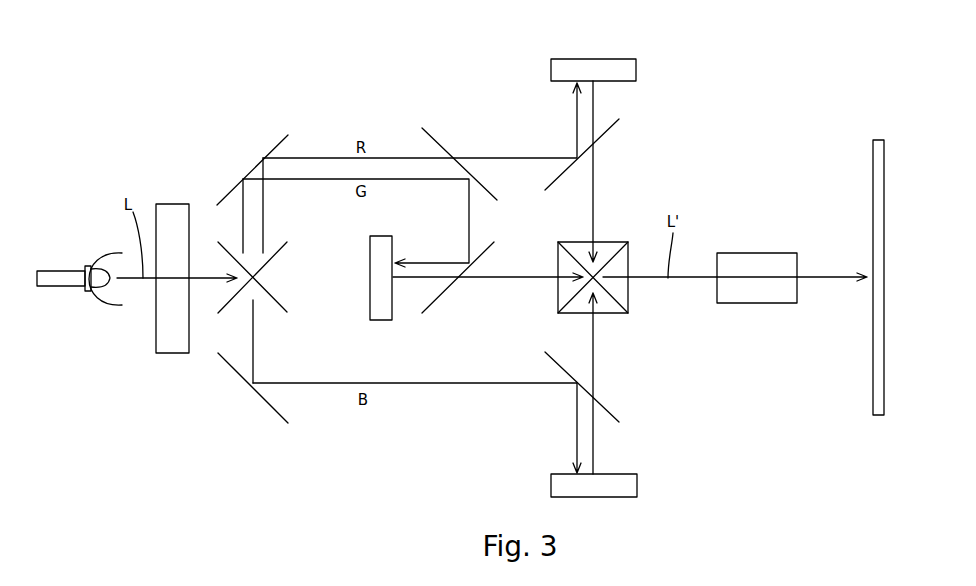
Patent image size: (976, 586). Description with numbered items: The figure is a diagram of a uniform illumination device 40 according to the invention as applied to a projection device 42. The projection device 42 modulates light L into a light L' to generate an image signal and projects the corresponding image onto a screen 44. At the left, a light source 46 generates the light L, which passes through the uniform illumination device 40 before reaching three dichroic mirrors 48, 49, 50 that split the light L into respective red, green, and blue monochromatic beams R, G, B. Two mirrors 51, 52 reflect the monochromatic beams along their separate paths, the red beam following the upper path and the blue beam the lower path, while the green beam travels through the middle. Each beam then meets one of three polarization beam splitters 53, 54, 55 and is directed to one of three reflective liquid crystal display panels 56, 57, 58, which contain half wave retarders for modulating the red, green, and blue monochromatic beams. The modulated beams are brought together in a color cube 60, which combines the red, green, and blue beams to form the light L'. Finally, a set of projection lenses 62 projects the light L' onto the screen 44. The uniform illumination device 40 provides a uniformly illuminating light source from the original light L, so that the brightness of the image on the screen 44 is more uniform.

The uniform illumination device 40 is at (173, 204).
The projection device 42 is at (333, 62).
The screen 44 is at (878, 139).
The light source 46 is at (101, 252).
The dichroic mirror 48 is at (283, 249).
The dichroic mirror 49 is at (283, 303).
The dichroic mirror 50 is at (433, 130).
The mirror 51 is at (275, 142).
The mirror 52 is at (270, 407).
The polarization beam splitter 53 is at (609, 127).
The polarization beam splitter 54 is at (438, 300).
The polarization beam splitter 55 is at (612, 412).
The reflective liquid crystal display panel 56 is at (620, 58).
The reflective liquid crystal display panel 57 is at (392, 242).
The reflective liquid crystal display panel 58 is at (615, 498).
The color cube 60 is at (610, 242).
The projection lenses 62 is at (760, 253).